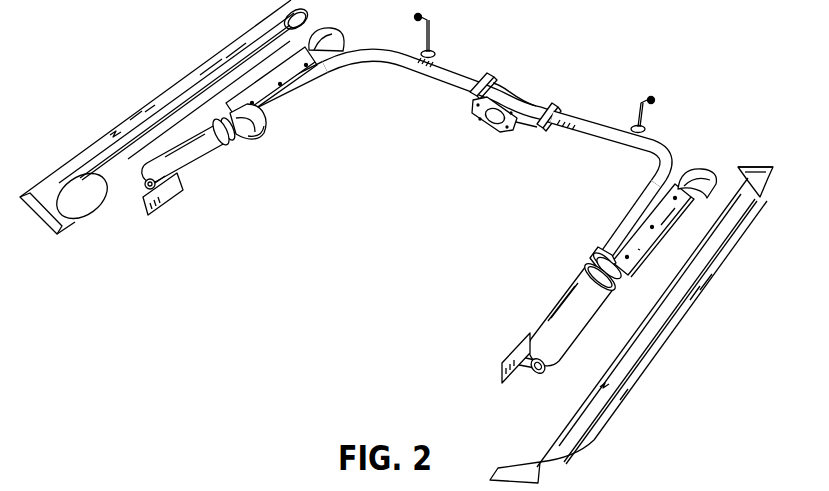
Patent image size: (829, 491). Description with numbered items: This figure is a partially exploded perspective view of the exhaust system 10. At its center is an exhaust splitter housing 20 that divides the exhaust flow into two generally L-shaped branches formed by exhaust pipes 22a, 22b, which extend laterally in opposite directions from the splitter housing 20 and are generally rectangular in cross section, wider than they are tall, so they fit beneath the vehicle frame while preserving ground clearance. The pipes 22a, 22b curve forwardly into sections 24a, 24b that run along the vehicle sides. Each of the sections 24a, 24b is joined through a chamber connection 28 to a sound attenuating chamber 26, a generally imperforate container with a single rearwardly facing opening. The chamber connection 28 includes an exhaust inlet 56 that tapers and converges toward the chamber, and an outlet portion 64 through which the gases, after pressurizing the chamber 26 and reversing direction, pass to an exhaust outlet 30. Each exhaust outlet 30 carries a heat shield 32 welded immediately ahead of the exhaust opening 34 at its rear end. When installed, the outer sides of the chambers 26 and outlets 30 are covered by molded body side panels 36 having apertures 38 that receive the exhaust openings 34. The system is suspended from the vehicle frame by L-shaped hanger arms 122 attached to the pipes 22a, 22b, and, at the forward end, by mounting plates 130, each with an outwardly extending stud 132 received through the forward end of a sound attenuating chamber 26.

The exhaust system 10 is at (452, 143).
The exhaust splitter housing 20 is at (508, 79).
The exhaust pipe 22a is at (446, 68).
The exhaust pipe 22b is at (581, 113).
The pipe section 24a is at (318, 85).
The pipe section 24b is at (603, 247).
The sound attenuating chamber 26 is at (200, 167).
The chamber connection 28 is at (244, 151).
The exhaust outlet 30 is at (349, 42).
The heat shield 32 is at (280, 90).
The exhaust opening 34 is at (716, 180).
The molded body side panel 36 is at (178, 77).
The aperture 38 is at (313, 28).
The exhaust inlet 56 is at (260, 136).
The outlet portion 64 is at (221, 146).
The hanger arm 122 is at (428, 32).
The mounting plate 130 is at (170, 200).
The stud 132 is at (521, 371).